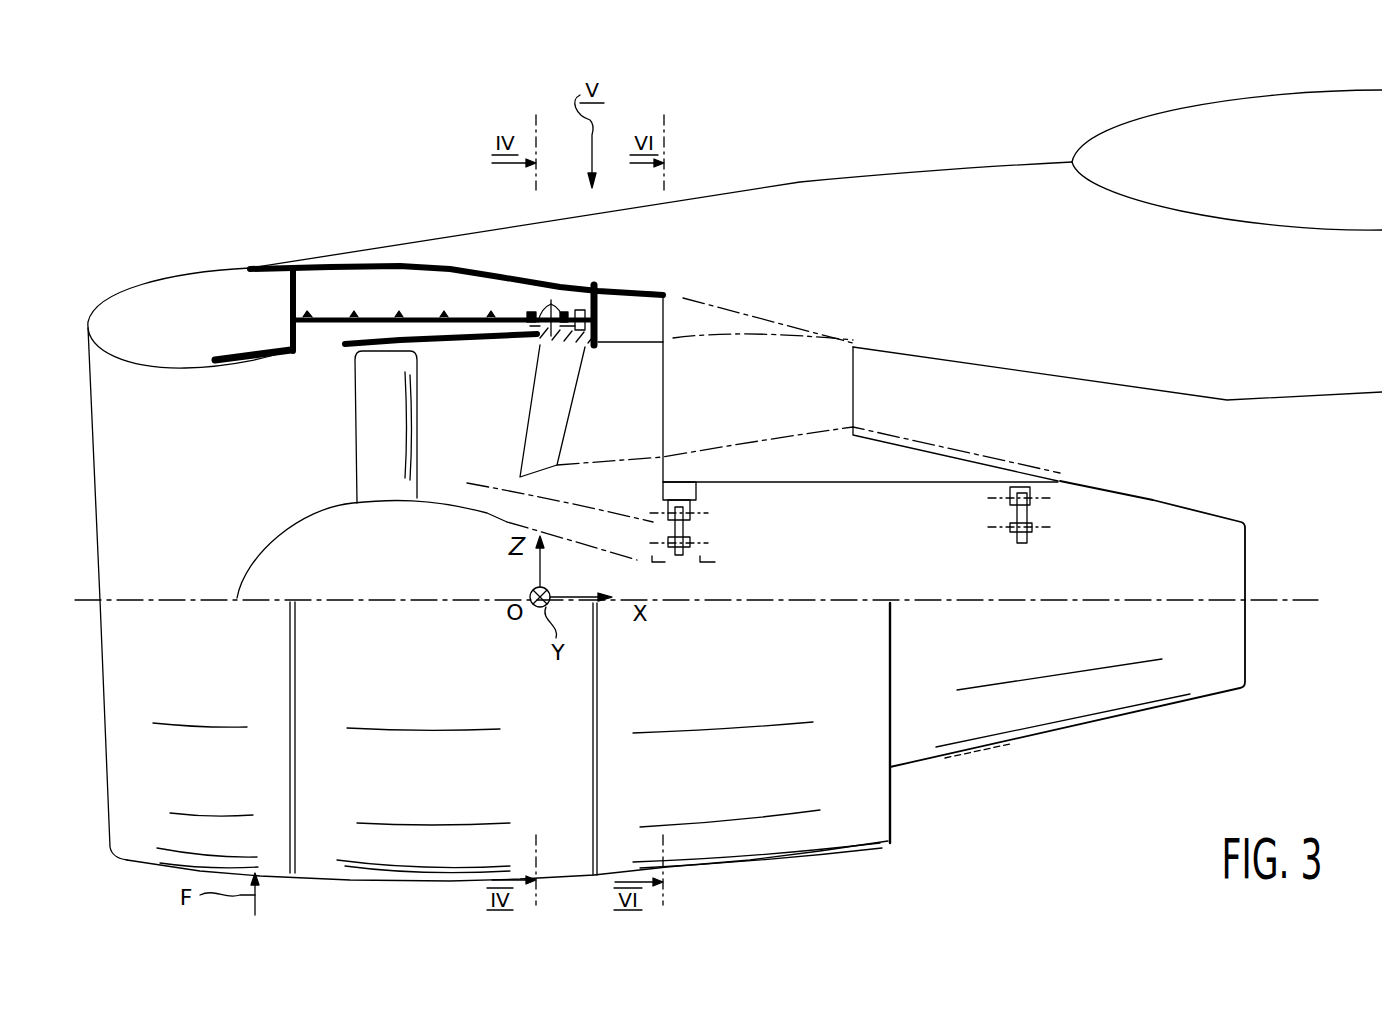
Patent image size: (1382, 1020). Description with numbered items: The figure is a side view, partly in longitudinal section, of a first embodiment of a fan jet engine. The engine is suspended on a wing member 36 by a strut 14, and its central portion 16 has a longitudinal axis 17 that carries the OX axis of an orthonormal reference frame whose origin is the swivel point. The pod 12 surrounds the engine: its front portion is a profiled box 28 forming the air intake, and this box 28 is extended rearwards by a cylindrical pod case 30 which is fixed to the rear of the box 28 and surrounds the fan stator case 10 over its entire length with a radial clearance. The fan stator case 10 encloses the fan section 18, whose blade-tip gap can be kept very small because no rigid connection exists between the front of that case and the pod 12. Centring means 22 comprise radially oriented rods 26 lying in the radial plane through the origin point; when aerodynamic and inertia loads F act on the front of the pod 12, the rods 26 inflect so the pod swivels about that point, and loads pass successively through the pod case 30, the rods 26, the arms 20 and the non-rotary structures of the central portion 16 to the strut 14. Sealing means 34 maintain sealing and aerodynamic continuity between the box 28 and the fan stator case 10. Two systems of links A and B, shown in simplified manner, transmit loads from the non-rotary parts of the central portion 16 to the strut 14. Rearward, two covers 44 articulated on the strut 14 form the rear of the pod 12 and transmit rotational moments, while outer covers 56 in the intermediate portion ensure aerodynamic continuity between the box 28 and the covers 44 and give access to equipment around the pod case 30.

The fan stator case 10 is at (463, 350).
The pod 12 is at (243, 262).
The strut 14 is at (802, 213).
The central portion 16 is at (707, 448).
The longitudinal axis 17 is at (1262, 603).
The fan section 18 is at (377, 468).
The arms 20 is at (552, 383).
The centring means 22 is at (563, 262).
The rods 26 is at (548, 300).
The profiled box 28 is at (128, 318).
The pod case 30 is at (368, 312).
The sealing means 34 is at (345, 343).
The wing member 36 is at (1107, 146).
The covers 44 is at (875, 823).
The outer covers 56 is at (430, 268).
The system of links A is at (693, 526).
The system of links B is at (1035, 512).